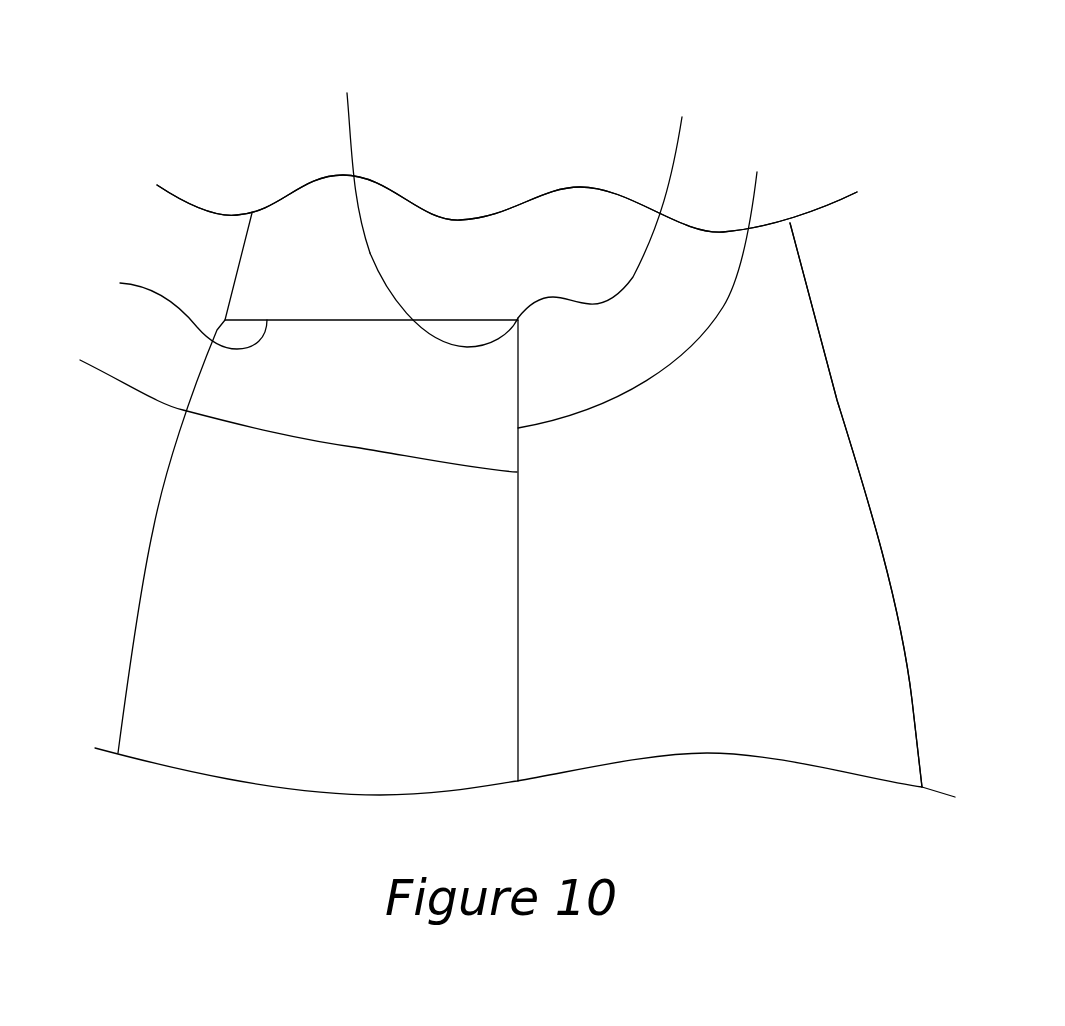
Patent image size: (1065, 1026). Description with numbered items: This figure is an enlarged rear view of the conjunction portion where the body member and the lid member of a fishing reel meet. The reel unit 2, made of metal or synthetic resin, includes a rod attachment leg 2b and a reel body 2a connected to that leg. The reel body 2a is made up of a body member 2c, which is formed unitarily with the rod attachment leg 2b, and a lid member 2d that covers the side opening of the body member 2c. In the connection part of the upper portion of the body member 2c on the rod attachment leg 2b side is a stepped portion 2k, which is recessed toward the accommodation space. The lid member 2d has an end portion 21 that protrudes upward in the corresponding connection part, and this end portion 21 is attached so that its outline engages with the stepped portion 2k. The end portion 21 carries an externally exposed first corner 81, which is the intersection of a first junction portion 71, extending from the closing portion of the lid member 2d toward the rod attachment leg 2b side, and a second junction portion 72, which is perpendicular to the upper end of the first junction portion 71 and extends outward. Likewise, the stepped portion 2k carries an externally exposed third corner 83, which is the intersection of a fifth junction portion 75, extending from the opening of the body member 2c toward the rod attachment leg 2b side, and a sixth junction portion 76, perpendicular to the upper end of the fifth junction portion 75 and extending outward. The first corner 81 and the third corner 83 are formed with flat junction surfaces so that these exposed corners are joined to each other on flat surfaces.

The reel unit 2 is at (927, 493).
The reel body 2a is at (850, 320).
The rod attachment leg 2b is at (575, 222).
The body member 2c is at (805, 385).
The lid member 2d is at (208, 463).
The stepped portion 2k is at (393, 225).
The end portion 21 is at (320, 370).
The first junction portion 71 is at (651, 282).
The second junction portion 72 is at (290, 318).
The fifth junction portion 75 is at (274, 406).
The sixth junction portion 76 is at (169, 306).
The first corner 81 is at (609, 199).
The third corner 83 is at (351, 156).